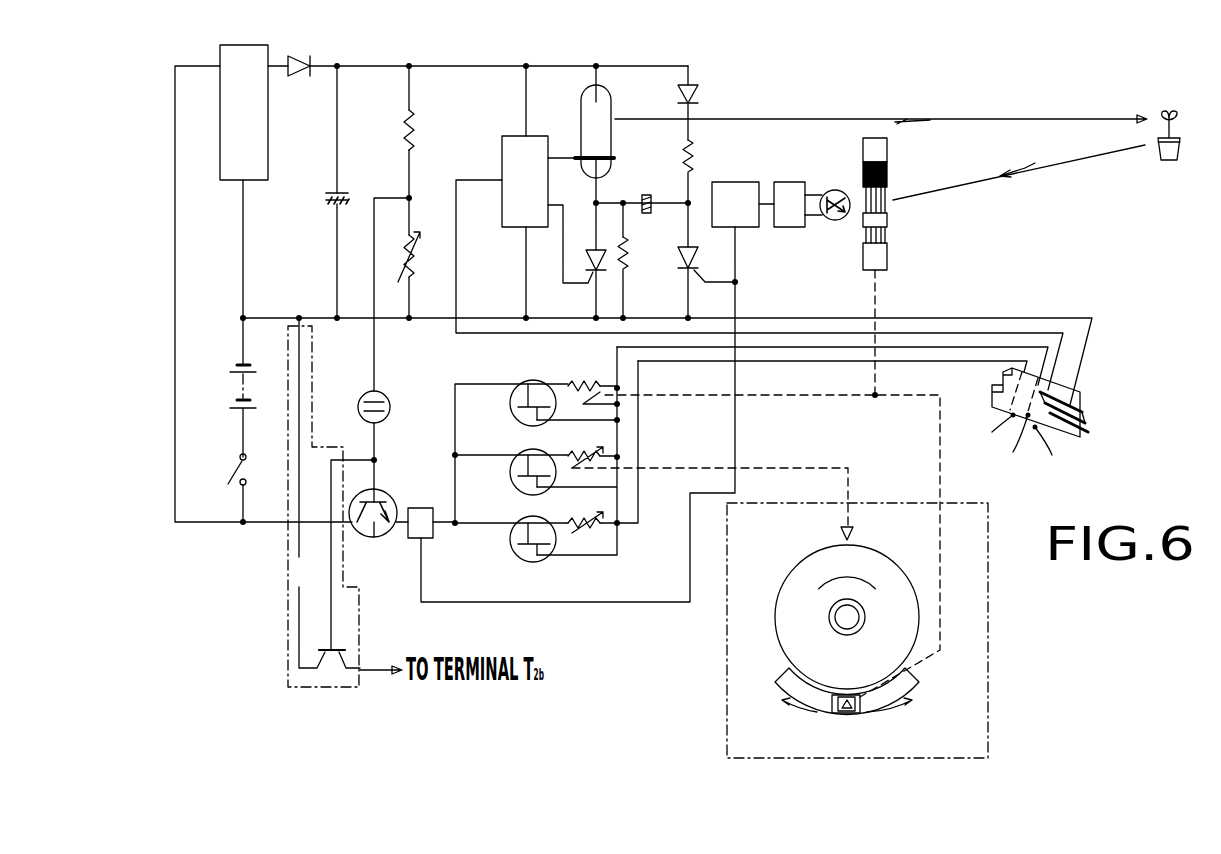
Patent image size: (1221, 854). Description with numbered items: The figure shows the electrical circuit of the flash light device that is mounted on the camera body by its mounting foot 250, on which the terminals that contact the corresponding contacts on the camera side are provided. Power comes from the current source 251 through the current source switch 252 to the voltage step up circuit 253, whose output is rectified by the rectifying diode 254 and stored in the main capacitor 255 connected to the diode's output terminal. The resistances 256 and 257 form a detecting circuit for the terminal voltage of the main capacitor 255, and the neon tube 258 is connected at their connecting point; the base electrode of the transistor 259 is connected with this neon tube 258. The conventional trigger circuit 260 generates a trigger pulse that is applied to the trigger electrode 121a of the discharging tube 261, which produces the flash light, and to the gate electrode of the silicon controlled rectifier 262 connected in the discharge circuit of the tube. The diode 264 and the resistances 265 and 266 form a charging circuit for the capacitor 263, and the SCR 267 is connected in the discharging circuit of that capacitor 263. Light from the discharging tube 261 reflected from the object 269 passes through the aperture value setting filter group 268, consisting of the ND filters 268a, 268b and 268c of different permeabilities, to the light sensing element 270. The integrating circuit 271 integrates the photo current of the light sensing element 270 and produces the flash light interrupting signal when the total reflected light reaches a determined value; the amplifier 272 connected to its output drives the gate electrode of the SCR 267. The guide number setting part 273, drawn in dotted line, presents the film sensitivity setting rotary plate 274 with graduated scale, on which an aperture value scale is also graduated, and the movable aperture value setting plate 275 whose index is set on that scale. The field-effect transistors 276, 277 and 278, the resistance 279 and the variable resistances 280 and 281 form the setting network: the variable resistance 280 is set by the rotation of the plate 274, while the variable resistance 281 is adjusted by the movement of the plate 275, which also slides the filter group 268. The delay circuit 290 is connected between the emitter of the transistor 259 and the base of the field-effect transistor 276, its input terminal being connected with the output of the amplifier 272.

The mounting foot 250 is at (1082, 398).
The current source 251 is at (256, 387).
The current source switch 252 is at (255, 488).
The voltage step up circuit 253 is at (244, 112).
The rectifying diode 254 is at (303, 50).
The main capacitor 255 is at (319, 201).
The resistance 256 is at (427, 132).
The resistance 257 is at (424, 258).
The neon tube 258 is at (356, 407).
The transistor 259 is at (380, 497).
The trigger circuit 260 is at (525, 181).
The discharging tube 261 is at (581, 100).
The trigger electrode 121a is at (612, 156).
The silicon controlled rectifier 262 is at (584, 258).
The capacitor 263 is at (646, 195).
The diode 264 is at (705, 96).
The resistance 265 is at (705, 160).
The resistance 266 is at (639, 257).
The SCR 267 is at (689, 246).
The aperture value setting filter group 268 is at (887, 148).
The ND filter 268a is at (887, 175).
The ND filter 268b is at (890, 208).
The ND filter 268c is at (890, 245).
The object 269 is at (1166, 162).
The light sensing element 270 is at (838, 221).
The integrating circuit 271 is at (790, 182).
The amplifier 272 is at (745, 228).
The guide number setting part 273 is at (988, 612).
The film sensitivity setting rotary plate 274 is at (893, 560).
The aperture value setting plate 275 is at (785, 685).
The field-effect transistor 276 is at (518, 539).
The field-effect transistor 277 is at (518, 472).
The field-effect transistor 278 is at (533, 386).
The resistance 279 is at (582, 510).
The variable resistance 280 is at (585, 444).
The variable resistance 281 is at (592, 375).
The delay circuit 290 is at (408, 538).